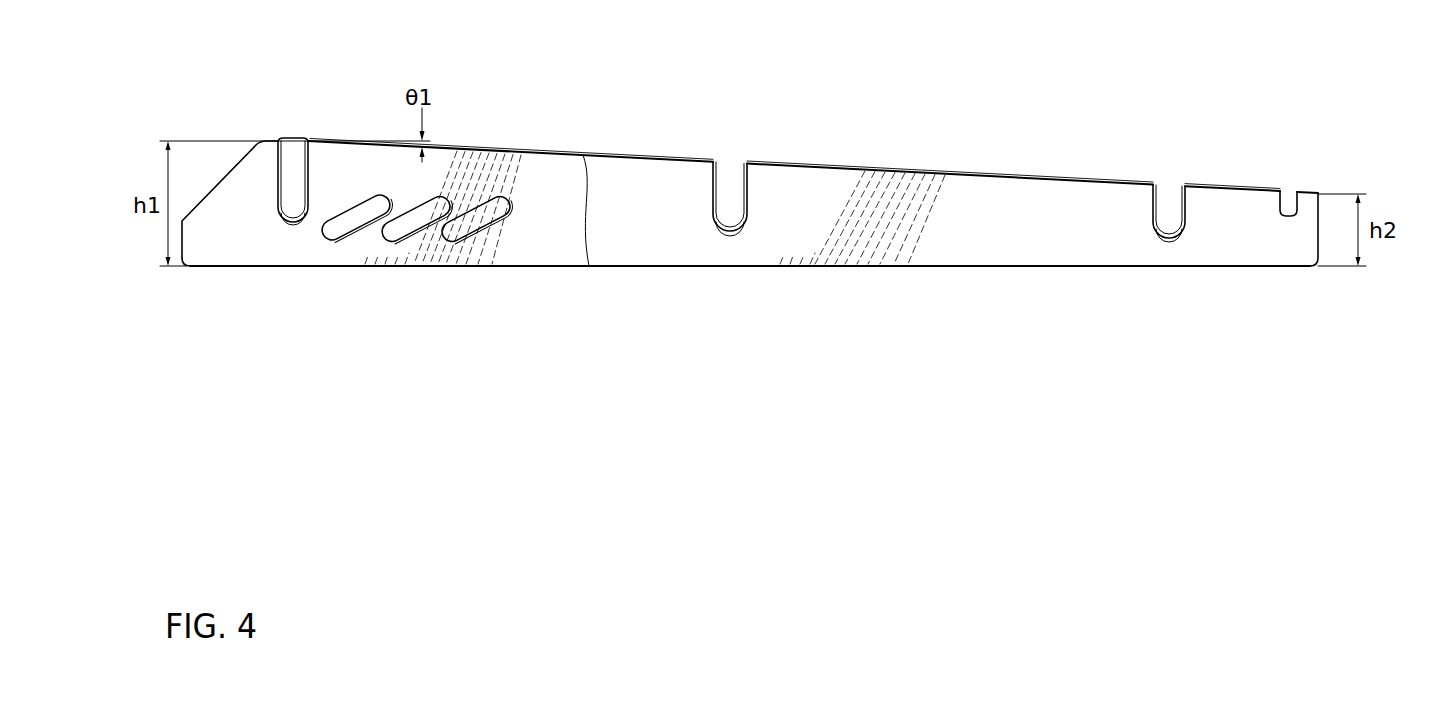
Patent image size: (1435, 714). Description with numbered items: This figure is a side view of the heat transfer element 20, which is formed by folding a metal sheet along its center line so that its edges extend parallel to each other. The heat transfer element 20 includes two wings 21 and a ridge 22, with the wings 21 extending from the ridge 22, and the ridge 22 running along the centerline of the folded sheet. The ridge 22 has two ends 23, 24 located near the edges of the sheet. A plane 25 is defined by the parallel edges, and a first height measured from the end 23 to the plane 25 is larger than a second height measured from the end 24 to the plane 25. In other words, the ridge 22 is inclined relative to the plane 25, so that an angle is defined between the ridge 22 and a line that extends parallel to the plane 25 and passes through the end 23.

The heat transfer element 20 is at (750, 199).
The wings 21 is at (950, 210).
The ridge 22 is at (661, 149).
The end 23 is at (263, 138).
The end 24 is at (1318, 192).
The plane 25 is at (508, 268).